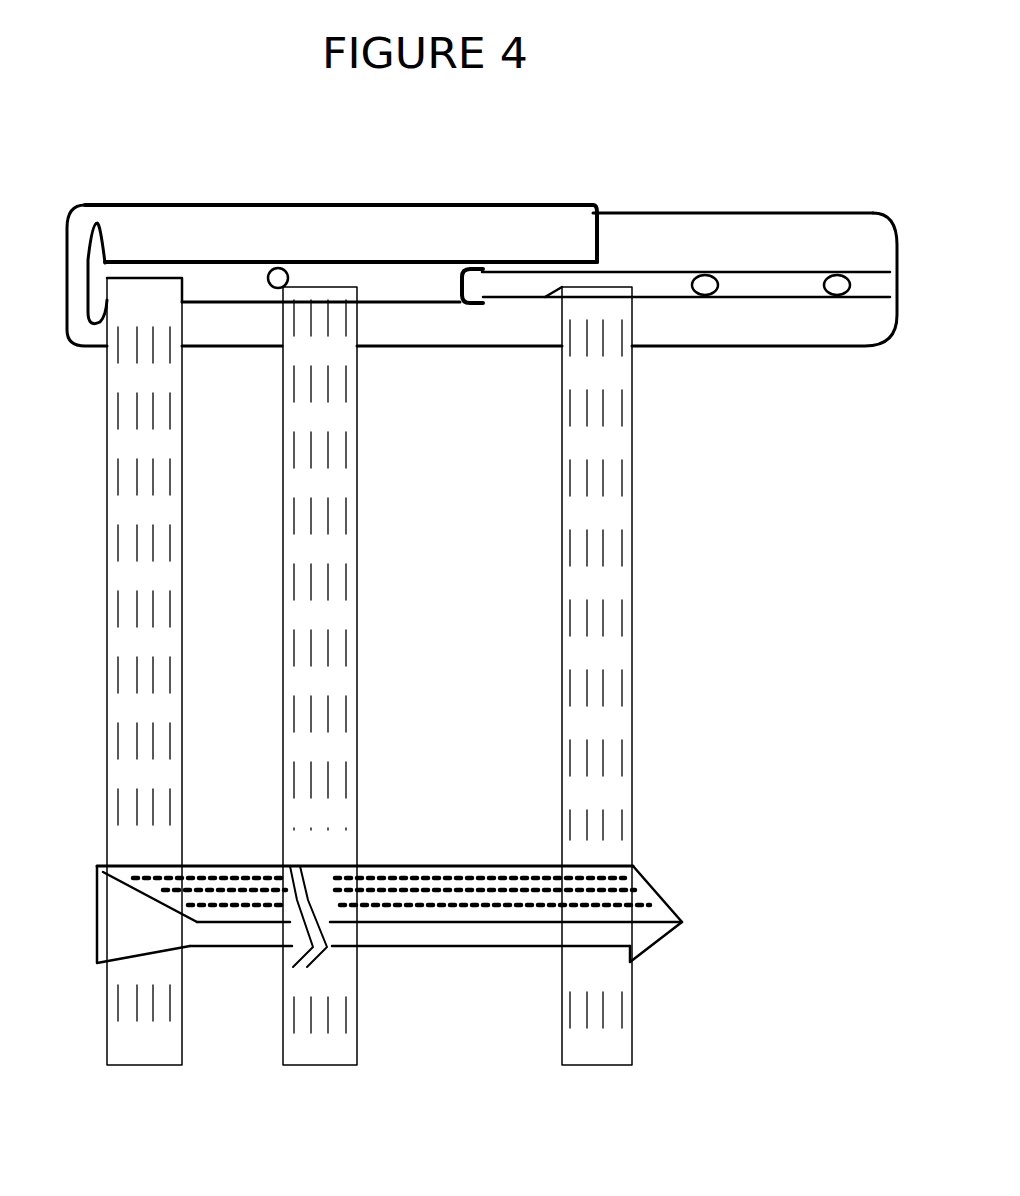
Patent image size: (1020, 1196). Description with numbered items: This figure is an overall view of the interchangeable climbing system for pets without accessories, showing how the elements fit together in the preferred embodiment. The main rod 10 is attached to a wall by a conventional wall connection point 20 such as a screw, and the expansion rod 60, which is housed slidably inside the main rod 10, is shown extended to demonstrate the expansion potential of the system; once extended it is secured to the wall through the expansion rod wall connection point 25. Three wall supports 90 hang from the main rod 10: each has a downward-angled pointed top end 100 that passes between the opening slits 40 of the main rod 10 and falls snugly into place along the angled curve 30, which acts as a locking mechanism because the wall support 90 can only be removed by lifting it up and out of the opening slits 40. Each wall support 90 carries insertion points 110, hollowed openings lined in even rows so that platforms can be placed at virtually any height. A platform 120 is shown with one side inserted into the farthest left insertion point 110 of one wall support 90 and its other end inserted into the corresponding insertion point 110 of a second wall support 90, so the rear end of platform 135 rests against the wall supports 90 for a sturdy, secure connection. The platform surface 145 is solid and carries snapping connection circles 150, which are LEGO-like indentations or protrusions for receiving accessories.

The main rod 10 is at (273, 230).
The wall connection point 20 is at (278, 268).
The expansion rod wall connection point 25 is at (837, 285).
The angled curve 30 is at (88, 318).
The opening slits 40 is at (207, 300).
The expansion rod 60 is at (642, 245).
The wall support 90 is at (155, 1037).
The pointed top end 100 is at (95, 296).
The insertion points 110 is at (600, 535).
The platform 120 is at (128, 912).
The rear end of platform 135 is at (95, 940).
The platform surface 145 is at (595, 908).
The snapping connection circles 150 is at (527, 893).